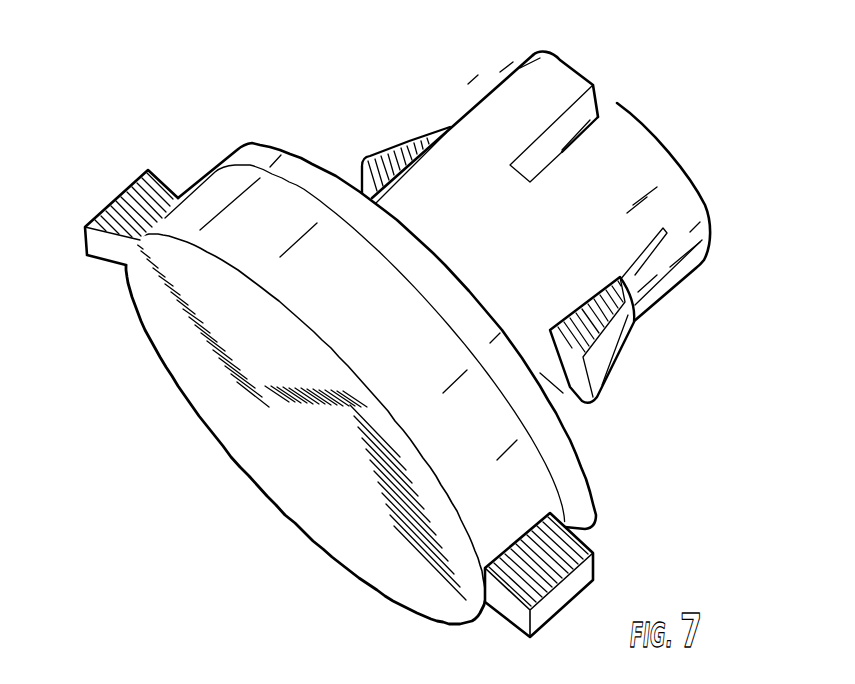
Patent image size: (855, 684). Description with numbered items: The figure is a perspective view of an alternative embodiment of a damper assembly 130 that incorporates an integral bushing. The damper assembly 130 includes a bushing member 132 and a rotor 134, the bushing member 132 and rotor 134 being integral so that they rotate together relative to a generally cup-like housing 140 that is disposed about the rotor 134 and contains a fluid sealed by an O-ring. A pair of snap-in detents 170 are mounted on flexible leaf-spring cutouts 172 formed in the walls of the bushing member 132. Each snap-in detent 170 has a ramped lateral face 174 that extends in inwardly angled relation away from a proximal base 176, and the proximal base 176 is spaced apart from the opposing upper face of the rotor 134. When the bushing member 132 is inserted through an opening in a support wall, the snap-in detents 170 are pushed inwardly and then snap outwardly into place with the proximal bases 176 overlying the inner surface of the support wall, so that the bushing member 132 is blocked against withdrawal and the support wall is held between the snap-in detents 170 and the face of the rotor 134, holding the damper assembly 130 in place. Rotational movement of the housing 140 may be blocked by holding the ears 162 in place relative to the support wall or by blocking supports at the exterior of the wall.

The damper assembly 130 is at (419, 348).
The bushing member 132 is at (642, 152).
The rotor 134 is at (587, 462).
The housing 140 is at (293, 490).
The ears 162 is at (110, 202).
The snap-in detents 170 is at (526, 224).
The leaf-spring cutouts 172 is at (673, 267).
The ramped lateral face 174 is at (372, 153).
The proximal base 176 is at (360, 185).